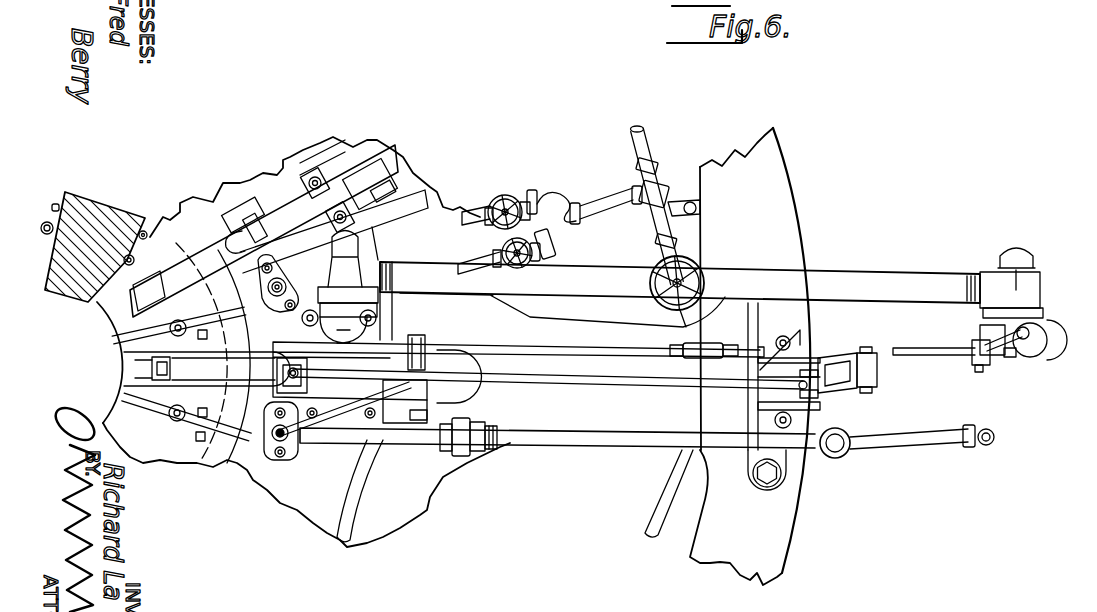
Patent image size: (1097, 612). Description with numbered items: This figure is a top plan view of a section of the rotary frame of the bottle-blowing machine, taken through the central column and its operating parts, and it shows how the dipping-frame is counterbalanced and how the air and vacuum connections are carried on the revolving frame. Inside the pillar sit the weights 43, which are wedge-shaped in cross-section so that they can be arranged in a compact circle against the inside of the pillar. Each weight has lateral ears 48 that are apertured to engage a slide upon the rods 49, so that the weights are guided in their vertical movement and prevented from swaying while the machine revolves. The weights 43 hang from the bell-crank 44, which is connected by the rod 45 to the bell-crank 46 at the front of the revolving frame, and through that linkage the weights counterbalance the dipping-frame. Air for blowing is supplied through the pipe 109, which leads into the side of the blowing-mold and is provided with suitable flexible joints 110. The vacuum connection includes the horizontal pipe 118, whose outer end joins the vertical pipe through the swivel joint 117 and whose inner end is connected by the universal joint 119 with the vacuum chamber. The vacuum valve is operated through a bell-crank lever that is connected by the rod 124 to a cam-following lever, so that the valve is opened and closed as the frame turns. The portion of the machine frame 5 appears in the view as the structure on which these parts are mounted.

The frame 5 is at (783, 180).
The weights 43 is at (122, 375).
The bell-crank 44 is at (305, 382).
The rod 45 is at (598, 380).
The bell-crank 46 is at (830, 386).
The lateral ears 48 is at (145, 243).
The rods 49 is at (143, 231).
The pipe 109 is at (902, 450).
The flexible joints 110 is at (840, 458).
The swivel joint 117 is at (1045, 315).
The horizontal pipe 118 is at (873, 272).
The universal joint 119 is at (340, 303).
The rod 124 is at (958, 358).